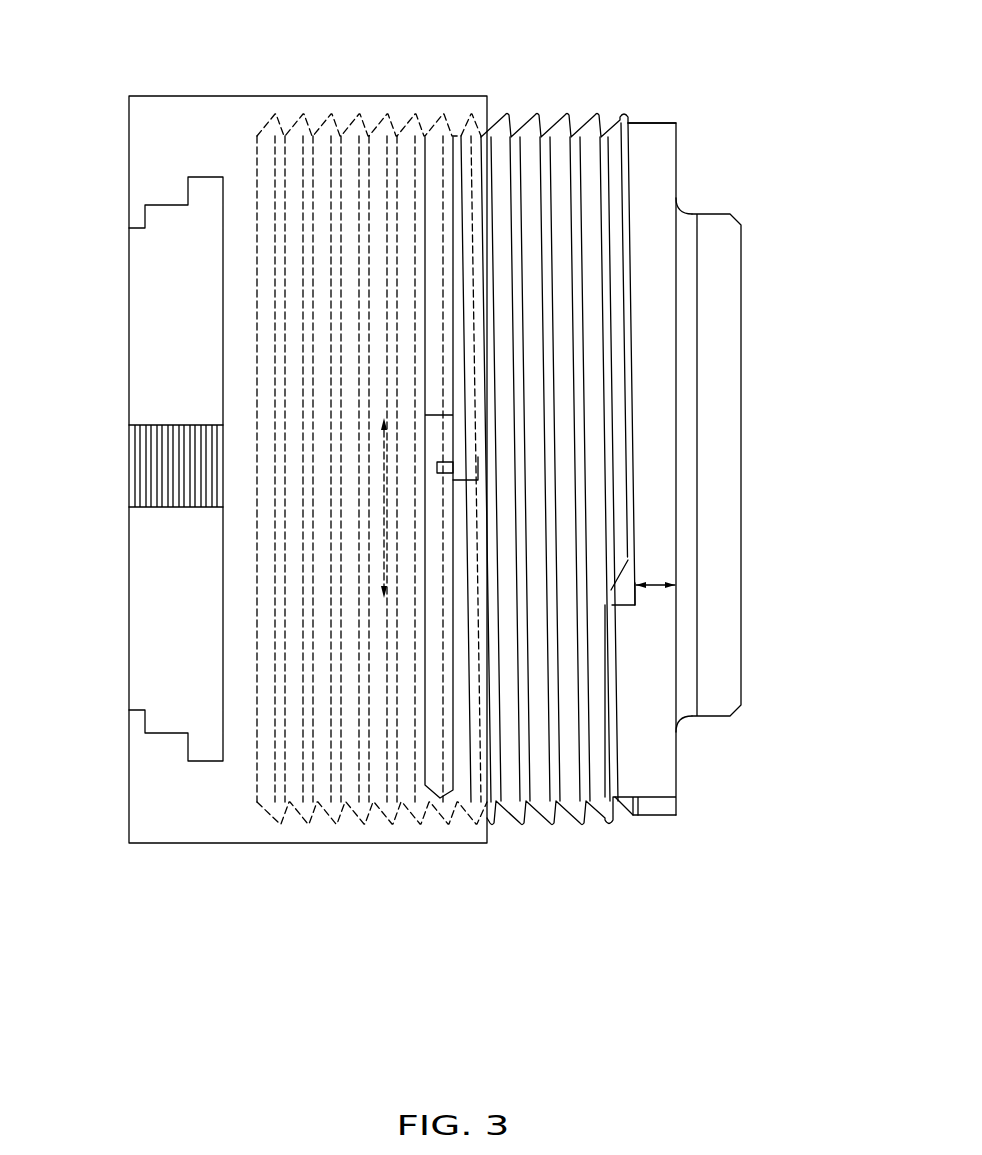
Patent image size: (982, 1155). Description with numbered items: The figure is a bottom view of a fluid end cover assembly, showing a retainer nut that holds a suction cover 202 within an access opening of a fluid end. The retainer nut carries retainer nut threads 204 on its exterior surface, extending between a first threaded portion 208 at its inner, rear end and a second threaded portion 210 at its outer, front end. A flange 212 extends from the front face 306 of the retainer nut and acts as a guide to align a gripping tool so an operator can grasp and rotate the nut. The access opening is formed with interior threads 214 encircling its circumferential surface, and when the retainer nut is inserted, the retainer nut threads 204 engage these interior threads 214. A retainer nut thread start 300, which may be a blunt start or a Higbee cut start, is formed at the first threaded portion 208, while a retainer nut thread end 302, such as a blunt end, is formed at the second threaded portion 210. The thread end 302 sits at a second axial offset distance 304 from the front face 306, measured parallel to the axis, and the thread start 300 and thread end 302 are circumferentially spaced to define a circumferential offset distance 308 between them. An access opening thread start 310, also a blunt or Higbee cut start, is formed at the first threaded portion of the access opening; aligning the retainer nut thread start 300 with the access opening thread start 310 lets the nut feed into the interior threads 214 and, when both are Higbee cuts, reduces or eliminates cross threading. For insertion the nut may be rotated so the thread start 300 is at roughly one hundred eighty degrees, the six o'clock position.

The suction cover 202 is at (166, 637).
The retainer nut threads 204 is at (488, 820).
The first threaded portion 208 is at (434, 432).
The second threaded portion 210 is at (625, 625).
The flange 212 is at (718, 661).
The interior threads 214 is at (434, 115).
The retainer nut thread start 300 is at (437, 462).
The retainer nut thread end 302 is at (623, 597).
The second axial offset distance 304 is at (657, 583).
The front face 306 is at (676, 157).
The circumferential offset distance 308 is at (378, 549).
The access opening thread start 310 is at (473, 444).